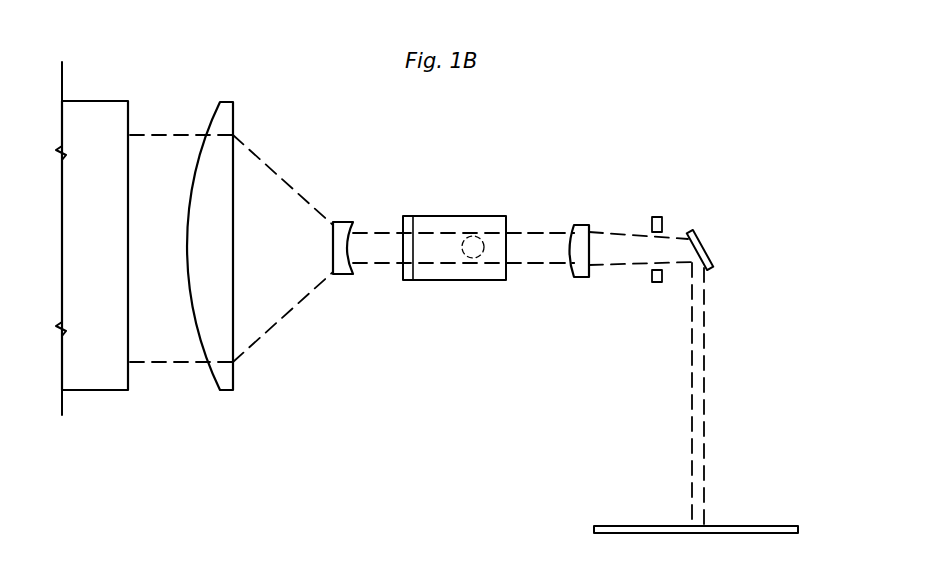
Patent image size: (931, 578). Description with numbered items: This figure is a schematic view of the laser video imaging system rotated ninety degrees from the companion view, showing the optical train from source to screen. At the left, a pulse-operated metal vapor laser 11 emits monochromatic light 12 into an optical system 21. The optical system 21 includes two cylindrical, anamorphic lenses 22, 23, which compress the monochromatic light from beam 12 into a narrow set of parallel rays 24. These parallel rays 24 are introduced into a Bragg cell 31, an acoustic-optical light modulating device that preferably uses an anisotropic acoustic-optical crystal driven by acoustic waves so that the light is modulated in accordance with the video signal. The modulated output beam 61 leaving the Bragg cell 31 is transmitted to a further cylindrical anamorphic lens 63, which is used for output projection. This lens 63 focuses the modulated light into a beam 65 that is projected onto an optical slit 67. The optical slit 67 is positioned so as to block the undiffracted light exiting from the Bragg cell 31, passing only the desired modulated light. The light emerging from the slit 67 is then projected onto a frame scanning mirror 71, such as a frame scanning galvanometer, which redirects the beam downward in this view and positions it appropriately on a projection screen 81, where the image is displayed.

The pulse-operated metal vapor laser 11 is at (90, 100).
The monochromatic light 12 is at (148, 134).
The optical system 21 is at (276, 262).
The cylindrical anamorphic lens 22 is at (234, 112).
The cylindrical anamorphic lens 23 is at (340, 220).
The parallel rays 24 is at (376, 232).
The Bragg cell 31 is at (432, 215).
The modulated output beam 61 is at (536, 234).
The cylindrical anamorphic lens 63 is at (579, 279).
The beam 65 is at (613, 236).
The optical slit 67 is at (650, 284).
The frame scanning mirror 71 is at (705, 247).
The projection screen 81 is at (796, 526).